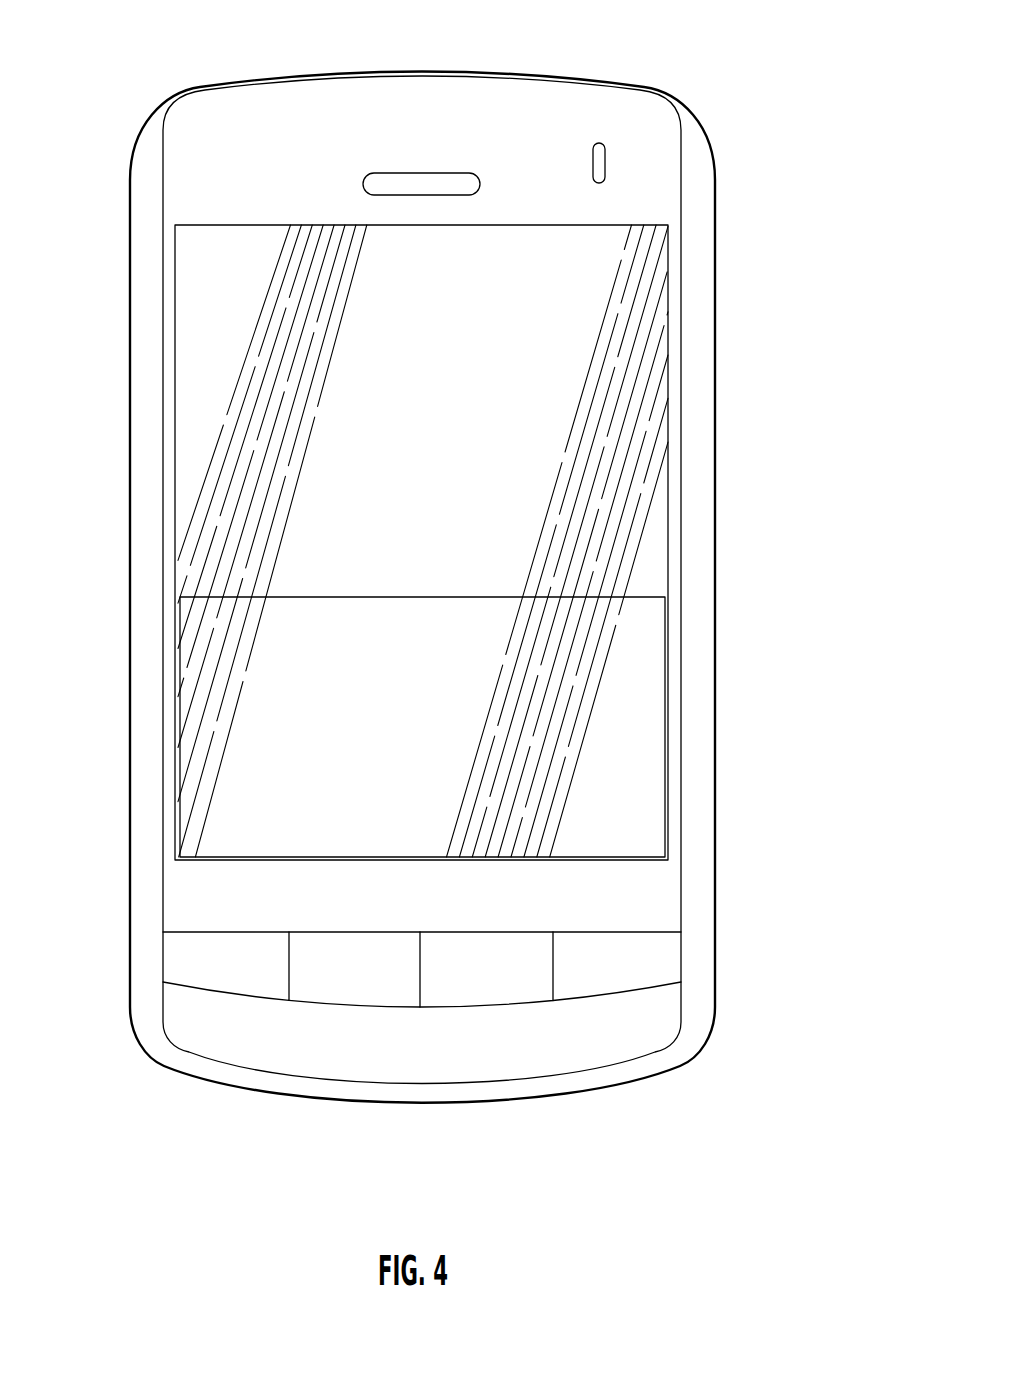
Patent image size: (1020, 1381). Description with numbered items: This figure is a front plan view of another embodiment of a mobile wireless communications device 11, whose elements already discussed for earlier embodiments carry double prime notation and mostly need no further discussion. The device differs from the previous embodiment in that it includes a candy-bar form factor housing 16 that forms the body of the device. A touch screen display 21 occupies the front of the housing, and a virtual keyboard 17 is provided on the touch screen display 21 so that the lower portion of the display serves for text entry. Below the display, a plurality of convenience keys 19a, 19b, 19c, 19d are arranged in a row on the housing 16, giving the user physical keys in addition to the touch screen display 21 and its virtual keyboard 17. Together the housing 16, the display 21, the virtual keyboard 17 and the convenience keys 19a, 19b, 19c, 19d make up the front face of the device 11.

The mobile wireless communications device 11 is at (776, 104).
The candy-bar form factor housing 16 is at (198, 195).
The touch screen display 21 is at (217, 365).
The virtual keyboard 17 is at (665, 686).
The convenience key 19a is at (220, 972).
The convenience key 19b is at (358, 982).
The convenience key 19c is at (460, 988).
The convenience key 19d is at (612, 972).